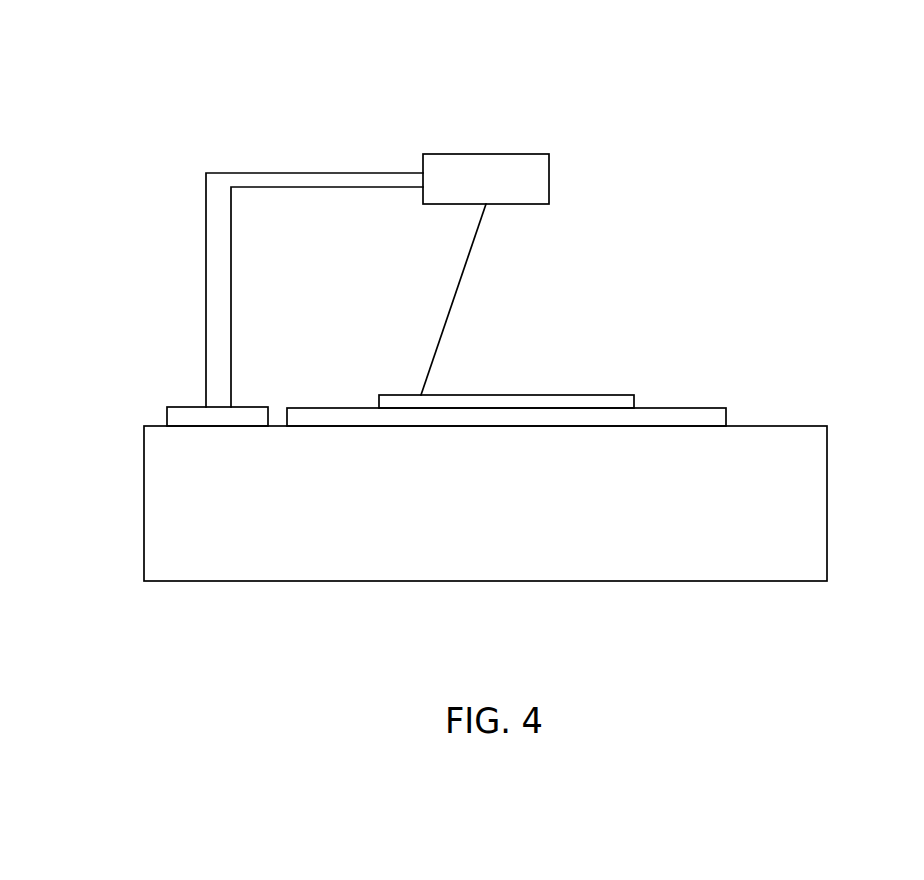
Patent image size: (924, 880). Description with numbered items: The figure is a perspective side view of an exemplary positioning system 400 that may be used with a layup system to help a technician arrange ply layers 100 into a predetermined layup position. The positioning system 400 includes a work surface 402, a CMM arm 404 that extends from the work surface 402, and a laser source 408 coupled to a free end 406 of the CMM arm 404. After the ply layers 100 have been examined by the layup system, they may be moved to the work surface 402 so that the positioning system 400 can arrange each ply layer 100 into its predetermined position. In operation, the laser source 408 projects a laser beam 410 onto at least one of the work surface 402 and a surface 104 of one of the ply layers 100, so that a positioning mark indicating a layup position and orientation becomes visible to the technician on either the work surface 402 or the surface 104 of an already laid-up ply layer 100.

The positioning system 400 is at (799, 136).
The work surface 402 is at (804, 426).
The CMM arm 404 is at (206, 313).
The free end 406 is at (419, 161).
The laser source 408 is at (486, 154).
The laser beam 410 is at (462, 277).
The ply layers 100 is at (636, 362).
The surface 104 is at (579, 395).